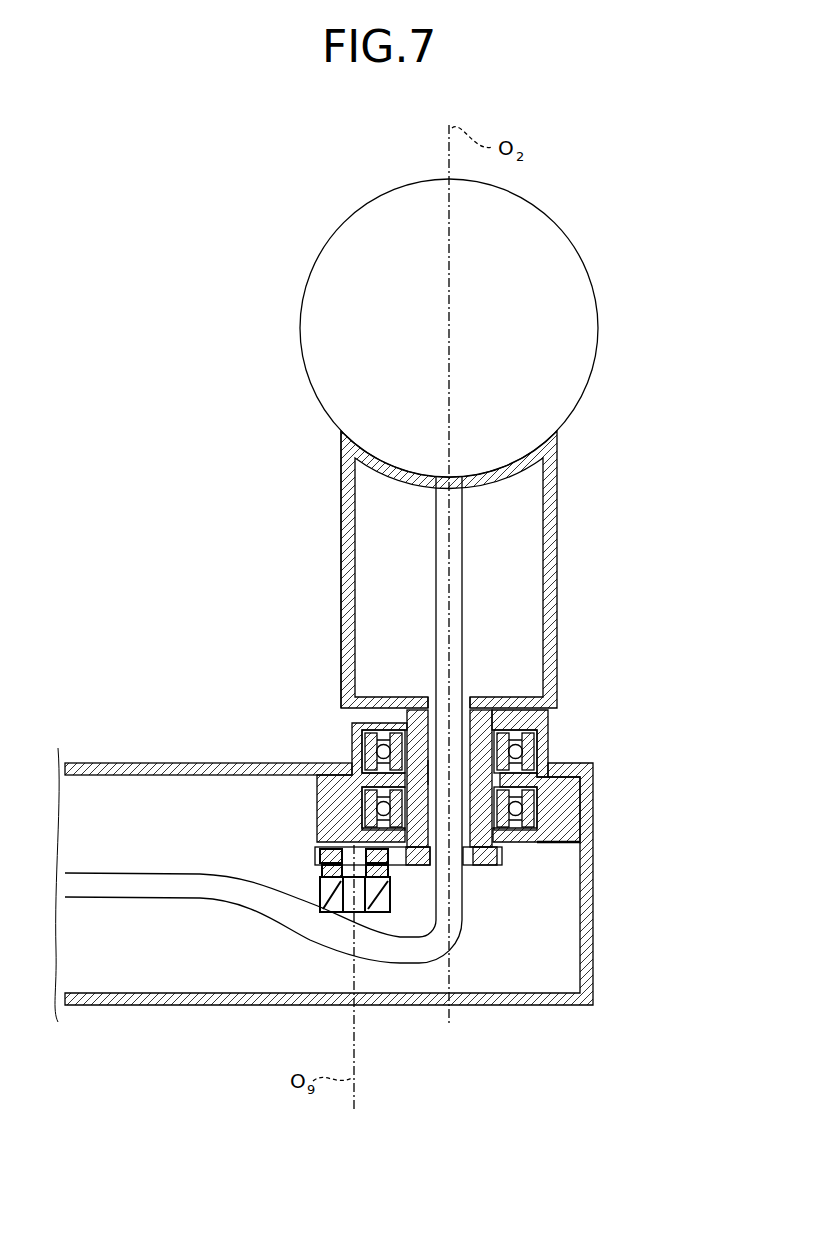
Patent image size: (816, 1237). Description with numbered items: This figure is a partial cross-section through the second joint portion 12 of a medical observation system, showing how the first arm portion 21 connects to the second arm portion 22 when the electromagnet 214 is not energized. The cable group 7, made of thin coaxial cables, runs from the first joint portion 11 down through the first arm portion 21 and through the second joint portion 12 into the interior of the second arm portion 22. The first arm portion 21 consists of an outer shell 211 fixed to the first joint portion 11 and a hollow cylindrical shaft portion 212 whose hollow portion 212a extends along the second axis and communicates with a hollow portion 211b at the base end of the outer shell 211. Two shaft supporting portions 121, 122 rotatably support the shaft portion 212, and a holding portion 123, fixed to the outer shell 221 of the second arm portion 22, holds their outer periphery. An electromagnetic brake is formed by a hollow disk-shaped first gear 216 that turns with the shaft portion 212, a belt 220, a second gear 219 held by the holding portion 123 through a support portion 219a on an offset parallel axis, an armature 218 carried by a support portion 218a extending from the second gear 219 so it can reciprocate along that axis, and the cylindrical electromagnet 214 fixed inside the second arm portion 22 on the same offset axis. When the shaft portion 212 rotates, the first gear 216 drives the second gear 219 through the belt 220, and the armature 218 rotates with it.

The cable group 7 is at (97, 872).
The first joint portion 11 is at (582, 238).
The second joint portion 12 is at (552, 724).
The first arm portion 21 is at (557, 566).
The second arm portion 22 is at (593, 954).
The shaft supporting portion 121 is at (540, 741).
The shaft supporting portion 122 is at (535, 797).
The holding portion 123 is at (568, 831).
The outer shell 211 is at (341, 593).
The hollow portion 211b is at (464, 700).
The shaft portion 212 is at (418, 722).
The hollow portion 212a is at (428, 772).
The electromagnet 214 is at (330, 913).
The first gear 216 is at (487, 866).
The armature 218 is at (322, 869).
The support portion 218a is at (340, 870).
The second gear 219 is at (318, 856).
The support portion 219a is at (318, 849).
The belt 220 is at (500, 856).
The outer shell 221 is at (152, 763).